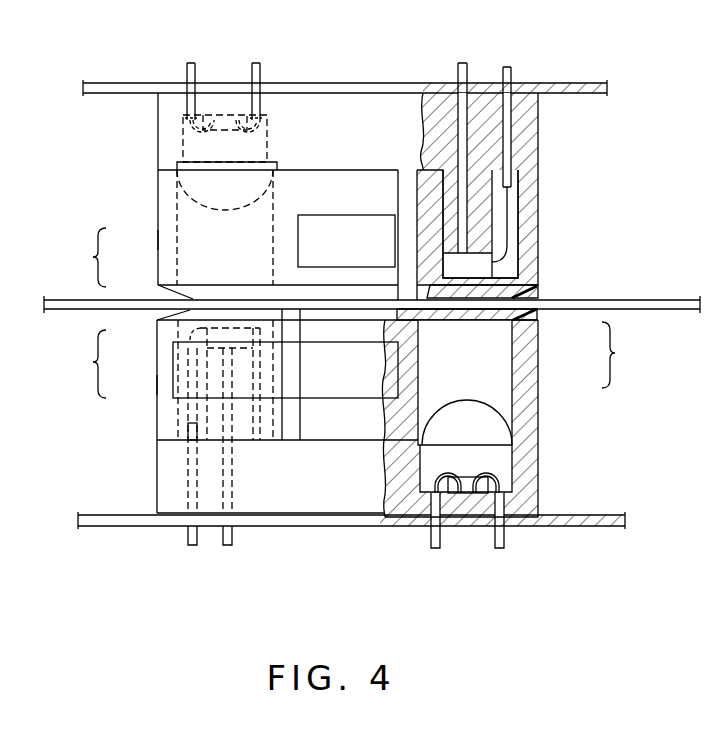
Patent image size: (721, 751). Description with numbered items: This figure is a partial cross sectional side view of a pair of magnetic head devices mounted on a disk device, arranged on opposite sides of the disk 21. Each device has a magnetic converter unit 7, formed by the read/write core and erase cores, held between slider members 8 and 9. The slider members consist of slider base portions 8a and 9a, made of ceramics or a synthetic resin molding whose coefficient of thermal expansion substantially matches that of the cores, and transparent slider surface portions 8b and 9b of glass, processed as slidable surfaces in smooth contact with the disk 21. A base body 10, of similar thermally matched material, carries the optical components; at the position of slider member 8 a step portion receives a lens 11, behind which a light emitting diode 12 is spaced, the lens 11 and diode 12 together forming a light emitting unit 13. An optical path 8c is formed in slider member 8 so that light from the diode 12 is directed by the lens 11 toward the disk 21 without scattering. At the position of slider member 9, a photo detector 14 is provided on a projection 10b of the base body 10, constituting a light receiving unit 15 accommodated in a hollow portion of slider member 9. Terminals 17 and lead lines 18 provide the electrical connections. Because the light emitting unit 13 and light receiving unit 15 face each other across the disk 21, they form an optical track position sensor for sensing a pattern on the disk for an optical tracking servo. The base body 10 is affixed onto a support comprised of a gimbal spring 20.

The magnetic converter unit 7 is at (407, 187).
The slider member 8 is at (66, 270).
The slider base portion 8a is at (158, 238).
The slider surface portion 8b is at (172, 293).
The optical path 8c is at (183, 208).
The slider member 9 is at (66, 375).
The slider base portion 9a is at (157, 388).
The slider surface portion 9b is at (168, 313).
The base body 10 is at (325, 102).
The projection 10b is at (538, 175).
The lens 11 is at (470, 405).
The light emitting diode 12 is at (222, 113).
The light emitting unit 13 is at (203, 146).
The photo detector 14 is at (506, 268).
The light receiving unit 15 is at (198, 268).
The terminals 17 is at (191, 63).
The lead lines 18 is at (510, 208).
The gimbal spring 20 is at (575, 83).
The disk 21 is at (650, 300).